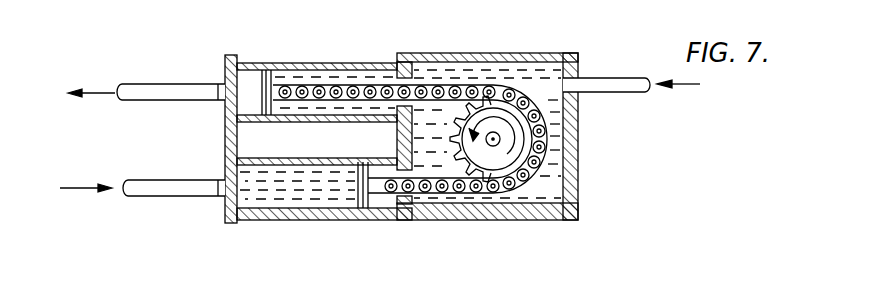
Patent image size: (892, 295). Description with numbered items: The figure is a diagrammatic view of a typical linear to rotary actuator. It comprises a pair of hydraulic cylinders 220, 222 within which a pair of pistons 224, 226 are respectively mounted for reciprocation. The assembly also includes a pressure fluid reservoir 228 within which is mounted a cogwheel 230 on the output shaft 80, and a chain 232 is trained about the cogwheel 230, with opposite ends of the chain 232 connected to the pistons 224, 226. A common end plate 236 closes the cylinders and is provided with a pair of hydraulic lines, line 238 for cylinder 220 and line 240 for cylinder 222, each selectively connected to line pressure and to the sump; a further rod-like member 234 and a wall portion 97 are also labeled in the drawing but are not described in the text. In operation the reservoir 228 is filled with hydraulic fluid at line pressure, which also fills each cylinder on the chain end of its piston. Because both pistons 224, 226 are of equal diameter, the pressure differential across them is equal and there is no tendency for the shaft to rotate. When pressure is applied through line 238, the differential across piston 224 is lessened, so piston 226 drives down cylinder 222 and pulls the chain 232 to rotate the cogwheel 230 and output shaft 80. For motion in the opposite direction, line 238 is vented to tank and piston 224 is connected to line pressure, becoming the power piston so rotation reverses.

The hydraulic line 240 is at (177, 90).
The hydraulic line 238 is at (197, 196).
The rod 234 is at (610, 82).
The common end plate 236 is at (225, 145).
The piston 226 is at (263, 80).
The hydraulic cylinder 222 is at (357, 63).
The pressure fluid reservoir 228 is at (533, 75).
The hydraulic cylinder 220 is at (270, 216).
The cylinder wall 97 is at (291, 216).
The piston 224 is at (358, 184).
The chain 232 is at (433, 195).
The cogwheel 230 is at (468, 183).
The output shaft 80 is at (512, 172).